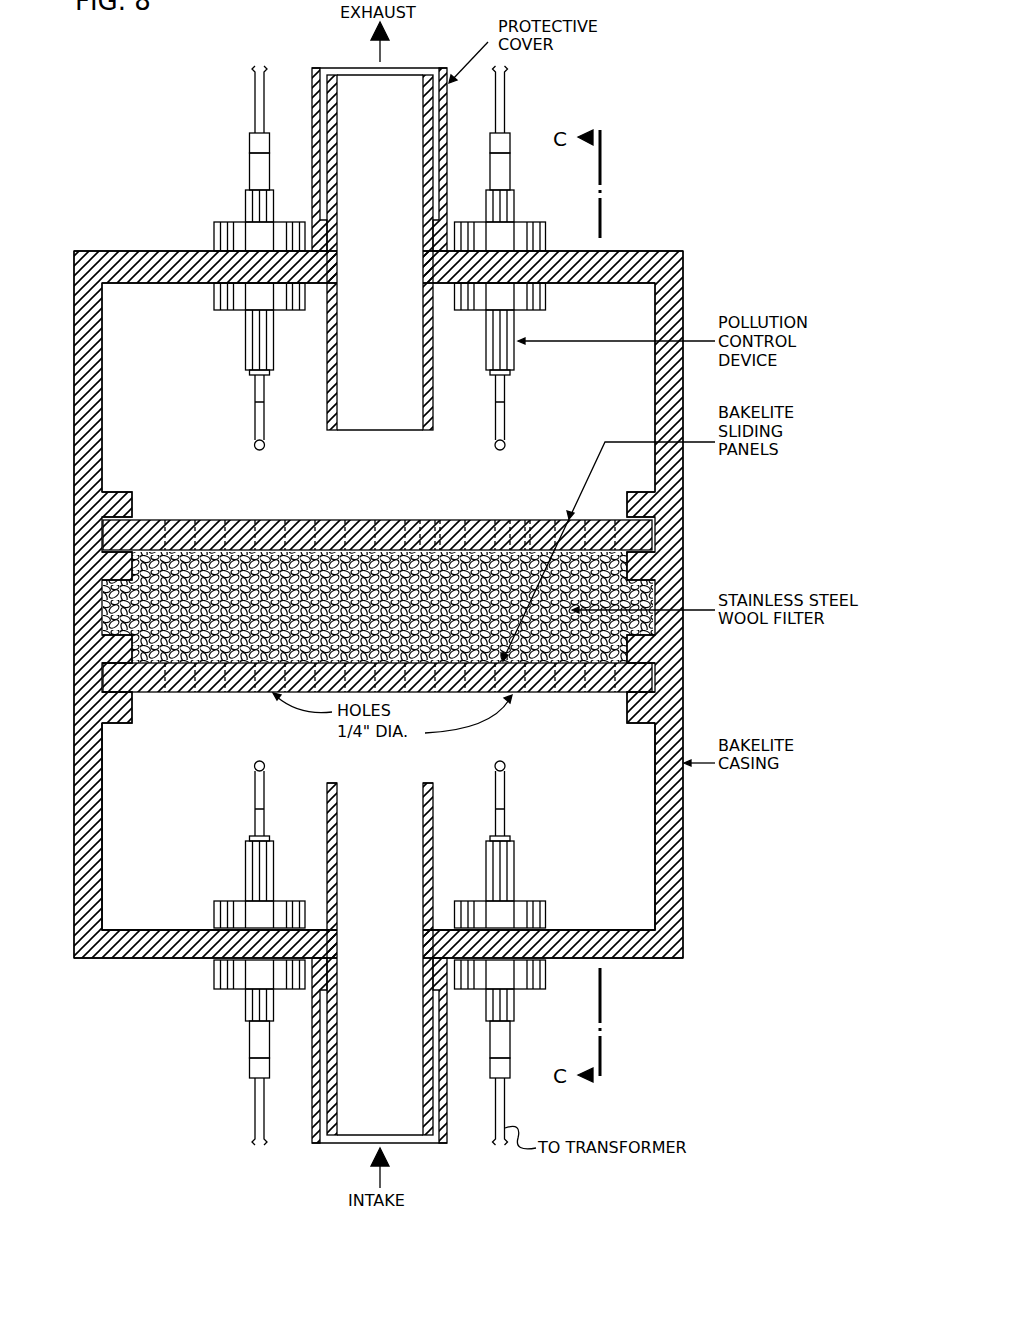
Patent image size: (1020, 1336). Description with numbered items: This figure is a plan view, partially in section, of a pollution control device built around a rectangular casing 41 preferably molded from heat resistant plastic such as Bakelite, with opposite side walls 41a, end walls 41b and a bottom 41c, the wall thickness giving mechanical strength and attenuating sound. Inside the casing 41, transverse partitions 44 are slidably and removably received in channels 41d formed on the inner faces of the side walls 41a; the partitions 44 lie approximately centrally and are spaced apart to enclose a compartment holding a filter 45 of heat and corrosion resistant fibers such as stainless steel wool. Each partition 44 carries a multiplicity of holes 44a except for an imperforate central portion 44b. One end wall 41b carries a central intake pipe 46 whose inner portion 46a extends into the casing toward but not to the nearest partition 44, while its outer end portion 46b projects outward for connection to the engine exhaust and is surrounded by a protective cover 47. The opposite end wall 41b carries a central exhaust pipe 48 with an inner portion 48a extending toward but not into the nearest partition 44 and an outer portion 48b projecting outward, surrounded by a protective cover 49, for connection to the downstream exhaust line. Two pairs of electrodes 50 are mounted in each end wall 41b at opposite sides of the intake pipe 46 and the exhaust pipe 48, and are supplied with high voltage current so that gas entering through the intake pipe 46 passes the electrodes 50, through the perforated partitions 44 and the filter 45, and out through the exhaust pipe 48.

The casing 41 is at (70, 919).
The side walls 41a is at (74, 760).
The end walls 41b is at (160, 251).
The bottom 41c is at (212, 776).
The channels 41d is at (617, 519).
The transverse partitions 44 is at (371, 517).
The holes 44a is at (515, 519).
The central portion 44b is at (428, 519).
The filter 45 is at (329, 554).
The intake pipe 46 is at (385, 954).
The inner portion of the intake pipe 46a is at (385, 783).
The outer end portion of the intake pipe 46b is at (412, 1137).
The protective cover 47 is at (313, 1136).
The exhaust pipe 48 is at (380, 281).
The inner portion of the exhaust pipe 48a is at (379, 431).
The outer portion of the exhaust pipe 48b is at (398, 72).
The protective cover 49 is at (312, 84).
The electrodes 50 is at (241, 857).